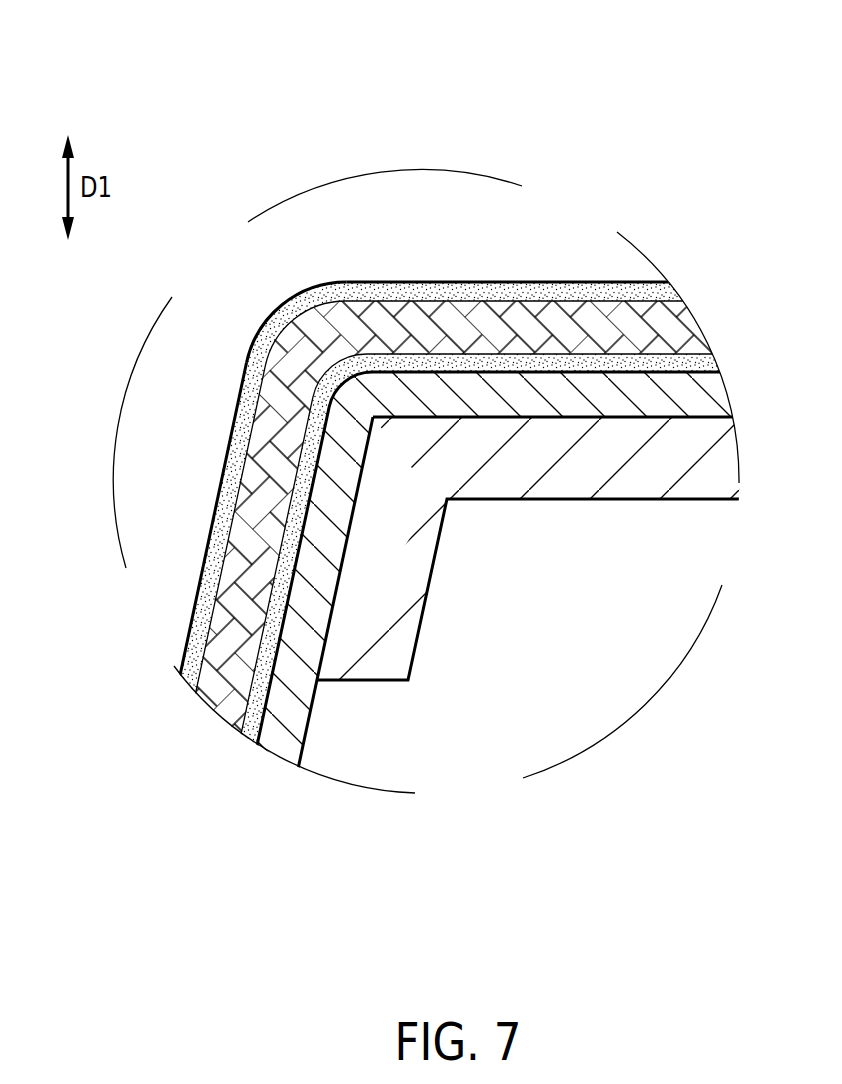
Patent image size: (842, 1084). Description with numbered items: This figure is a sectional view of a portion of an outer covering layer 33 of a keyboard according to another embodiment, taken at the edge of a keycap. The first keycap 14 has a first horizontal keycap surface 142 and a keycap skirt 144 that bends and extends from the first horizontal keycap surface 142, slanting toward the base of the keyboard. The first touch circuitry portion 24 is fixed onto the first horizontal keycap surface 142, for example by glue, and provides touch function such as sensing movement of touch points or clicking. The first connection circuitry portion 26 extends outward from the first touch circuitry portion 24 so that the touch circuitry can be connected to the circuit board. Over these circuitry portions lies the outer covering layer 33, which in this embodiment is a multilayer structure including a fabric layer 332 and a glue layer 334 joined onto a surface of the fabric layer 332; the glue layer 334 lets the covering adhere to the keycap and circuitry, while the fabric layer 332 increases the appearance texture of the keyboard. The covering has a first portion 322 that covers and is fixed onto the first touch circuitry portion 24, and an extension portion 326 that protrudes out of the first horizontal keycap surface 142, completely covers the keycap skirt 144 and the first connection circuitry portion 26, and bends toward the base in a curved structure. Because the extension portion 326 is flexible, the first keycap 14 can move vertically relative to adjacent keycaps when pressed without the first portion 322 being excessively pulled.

The first keycap 14 is at (525, 541).
The first horizontal keycap surface 142 is at (684, 405).
The keycap skirt 144 is at (387, 603).
The first touch circuitry portion 24 is at (552, 385).
The first connection circuitry portion 26 is at (295, 722).
The outer covering layer 33 is at (457, 407).
The fabric layer 332 is at (442, 312).
The glue layer 334 is at (345, 295).
The first portion 322 is at (510, 249).
The extension portion 326 is at (175, 390).